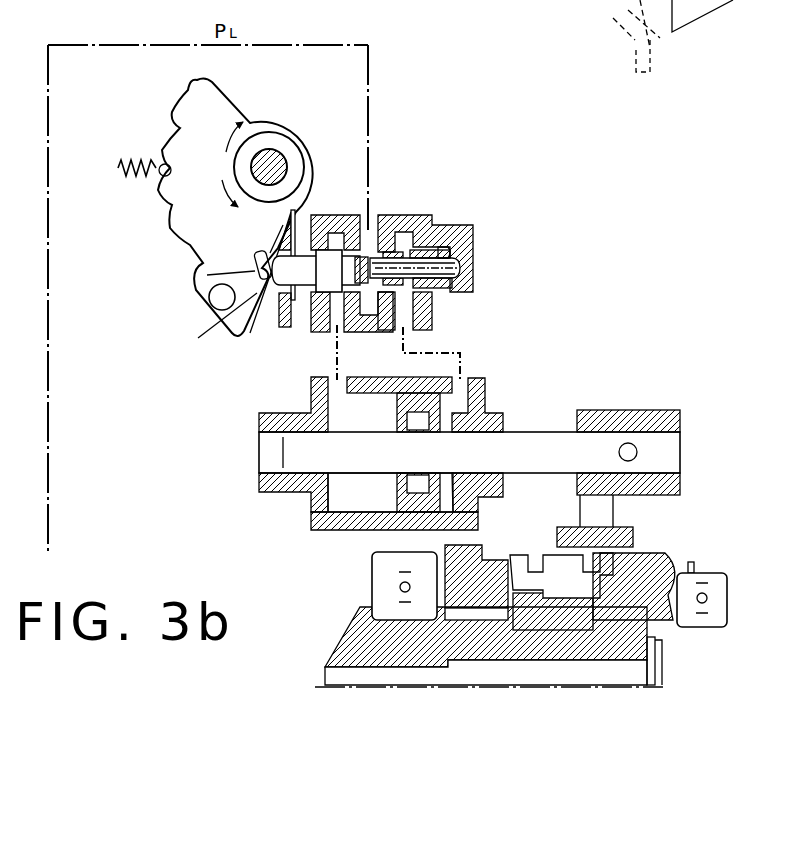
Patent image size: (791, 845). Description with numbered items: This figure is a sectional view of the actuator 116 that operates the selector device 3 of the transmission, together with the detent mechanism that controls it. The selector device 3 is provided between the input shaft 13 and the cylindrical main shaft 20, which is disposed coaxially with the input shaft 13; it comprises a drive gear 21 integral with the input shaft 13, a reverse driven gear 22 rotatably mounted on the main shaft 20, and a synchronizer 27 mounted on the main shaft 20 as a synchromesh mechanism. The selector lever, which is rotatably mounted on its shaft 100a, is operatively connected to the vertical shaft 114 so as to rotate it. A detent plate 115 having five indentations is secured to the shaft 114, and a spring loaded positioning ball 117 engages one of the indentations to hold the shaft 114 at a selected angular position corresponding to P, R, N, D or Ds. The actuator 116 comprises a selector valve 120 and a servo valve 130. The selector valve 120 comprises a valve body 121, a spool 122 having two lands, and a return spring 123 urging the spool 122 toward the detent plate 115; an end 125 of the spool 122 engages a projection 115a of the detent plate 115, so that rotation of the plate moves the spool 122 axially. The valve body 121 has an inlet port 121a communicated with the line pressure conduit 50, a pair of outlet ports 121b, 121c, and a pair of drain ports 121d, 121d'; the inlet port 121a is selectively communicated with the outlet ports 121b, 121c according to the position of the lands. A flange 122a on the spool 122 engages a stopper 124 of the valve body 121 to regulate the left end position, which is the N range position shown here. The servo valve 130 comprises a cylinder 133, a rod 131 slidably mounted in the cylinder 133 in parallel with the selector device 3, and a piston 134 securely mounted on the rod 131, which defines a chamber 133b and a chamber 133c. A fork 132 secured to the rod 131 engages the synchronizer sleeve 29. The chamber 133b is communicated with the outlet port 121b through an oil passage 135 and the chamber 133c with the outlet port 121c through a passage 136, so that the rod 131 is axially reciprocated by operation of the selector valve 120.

The shaft 100a is at (602, 24).
The line pressure conduit 50 is at (48, 265).
The vertical shaft 114 is at (272, 162).
The detent plate 115 is at (208, 262).
The projection 115a is at (200, 285).
The spring loaded positioning ball 117 is at (160, 164).
The end of the spool 125 is at (228, 328).
The stopper 124 is at (287, 307).
The drain port 121d is at (265, 344).
The spool 122 is at (362, 222).
The flange 122a is at (293, 247).
The inlet port 121a is at (333, 258).
The selector valve 120 is at (487, 231).
The valve body 121 is at (474, 268).
The drain port 121d' is at (474, 278).
The return spring 123 is at (438, 248).
The outlet port 121b is at (333, 334).
The outlet port 121c is at (432, 322).
The oil passage 135 is at (343, 376).
The passage 136 is at (462, 352).
The actuator 116 is at (558, 362).
The rod 131 is at (532, 437).
The cylinder 133 is at (311, 520).
The chamber 133b is at (350, 503).
The chamber 133c is at (447, 481).
The piston 134 is at (398, 418).
The fork 132 is at (623, 409).
The servo valve 130 is at (246, 479).
The synchronizer sleeve 29 is at (627, 539).
The main shaft 20 is at (343, 648).
The synchronizer 27 is at (558, 635).
The reverse driven gear 22 is at (475, 552).
The drive gear 21 is at (667, 543).
The input shaft 13 is at (687, 638).
The selector device 3 is at (412, 692).